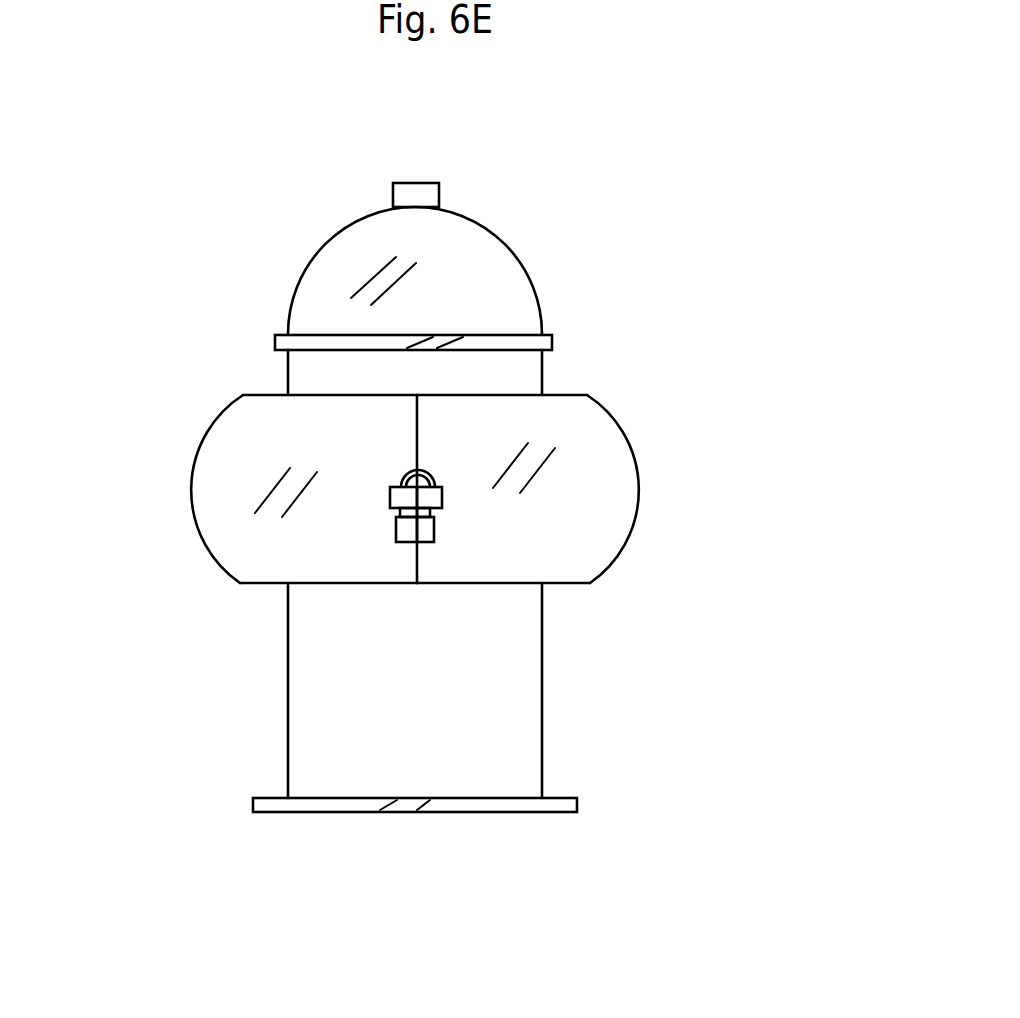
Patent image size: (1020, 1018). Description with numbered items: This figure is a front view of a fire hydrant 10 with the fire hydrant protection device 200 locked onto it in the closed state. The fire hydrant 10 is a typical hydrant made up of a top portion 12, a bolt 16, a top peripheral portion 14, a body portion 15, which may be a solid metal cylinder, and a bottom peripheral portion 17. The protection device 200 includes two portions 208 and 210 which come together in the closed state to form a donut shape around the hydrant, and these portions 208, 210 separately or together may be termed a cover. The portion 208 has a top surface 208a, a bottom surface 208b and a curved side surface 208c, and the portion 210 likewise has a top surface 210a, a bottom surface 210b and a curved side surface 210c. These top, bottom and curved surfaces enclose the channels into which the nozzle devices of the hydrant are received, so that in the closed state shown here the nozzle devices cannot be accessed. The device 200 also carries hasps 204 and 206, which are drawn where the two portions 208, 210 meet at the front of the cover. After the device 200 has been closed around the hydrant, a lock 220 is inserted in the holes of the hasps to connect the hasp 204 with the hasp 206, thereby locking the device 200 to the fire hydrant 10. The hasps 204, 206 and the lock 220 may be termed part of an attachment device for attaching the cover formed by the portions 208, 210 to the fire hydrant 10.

The fire hydrant 10 is at (523, 514).
The top portion 12 is at (413, 197).
The top peripheral portion 14 is at (523, 342).
The body portion 15 is at (528, 687).
The bolt 16 is at (458, 253).
The bottom peripheral portion 17 is at (547, 802).
The fire hydrant protection device 200 is at (485, 484).
The hasp 204 is at (398, 497).
The hasp 206 is at (430, 503).
The portion 208 is at (241, 484).
The top surface 208a is at (270, 395).
The bottom surface 208b is at (322, 587).
The curved side surface 208c is at (218, 467).
The portion 210 is at (661, 476).
The top surface 210a is at (458, 392).
The bottom surface 210b is at (477, 587).
The curved side surface 210c is at (592, 480).
The lock 220 is at (403, 477).